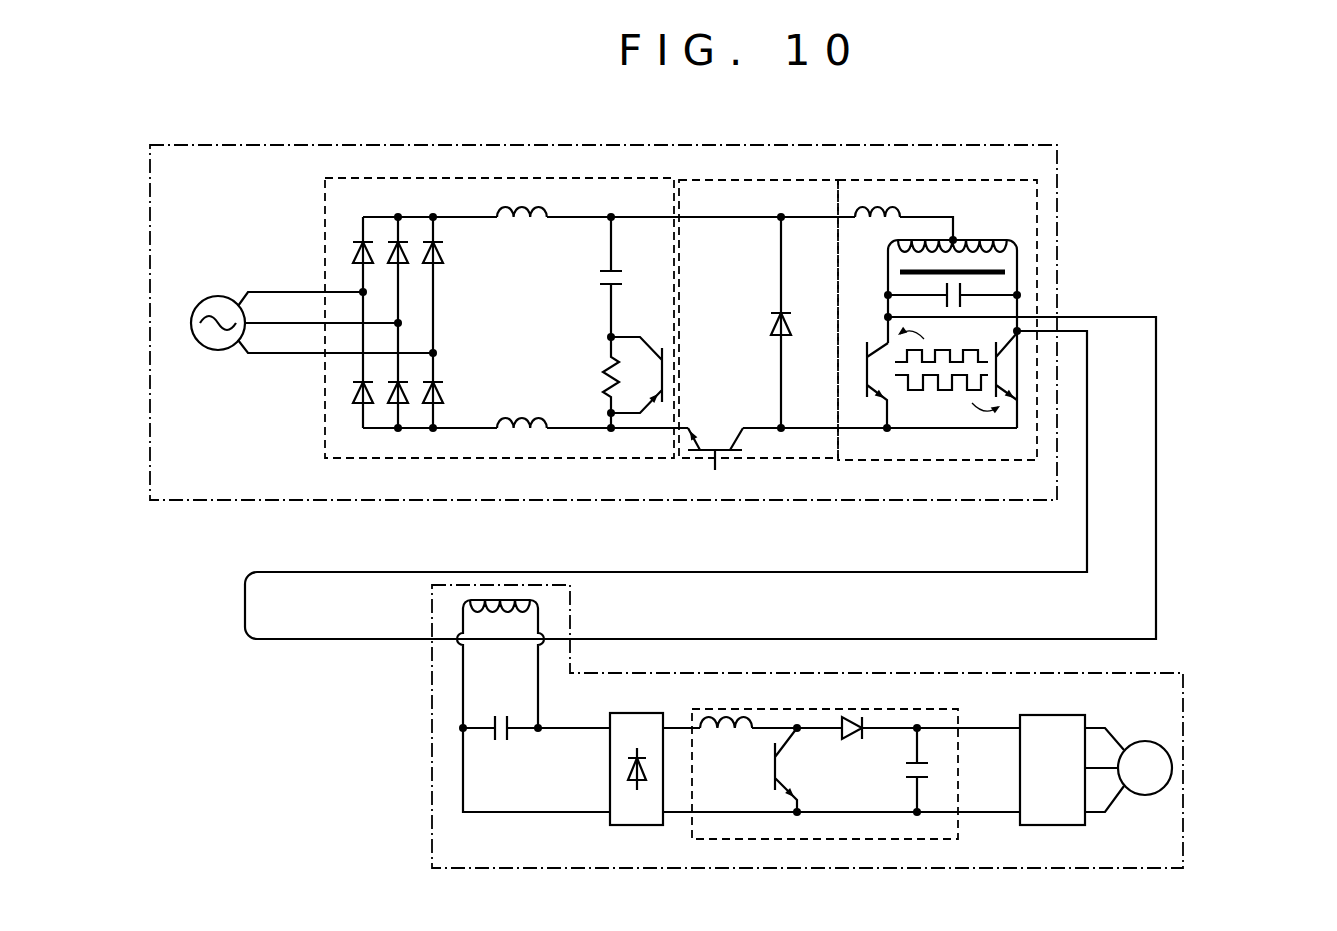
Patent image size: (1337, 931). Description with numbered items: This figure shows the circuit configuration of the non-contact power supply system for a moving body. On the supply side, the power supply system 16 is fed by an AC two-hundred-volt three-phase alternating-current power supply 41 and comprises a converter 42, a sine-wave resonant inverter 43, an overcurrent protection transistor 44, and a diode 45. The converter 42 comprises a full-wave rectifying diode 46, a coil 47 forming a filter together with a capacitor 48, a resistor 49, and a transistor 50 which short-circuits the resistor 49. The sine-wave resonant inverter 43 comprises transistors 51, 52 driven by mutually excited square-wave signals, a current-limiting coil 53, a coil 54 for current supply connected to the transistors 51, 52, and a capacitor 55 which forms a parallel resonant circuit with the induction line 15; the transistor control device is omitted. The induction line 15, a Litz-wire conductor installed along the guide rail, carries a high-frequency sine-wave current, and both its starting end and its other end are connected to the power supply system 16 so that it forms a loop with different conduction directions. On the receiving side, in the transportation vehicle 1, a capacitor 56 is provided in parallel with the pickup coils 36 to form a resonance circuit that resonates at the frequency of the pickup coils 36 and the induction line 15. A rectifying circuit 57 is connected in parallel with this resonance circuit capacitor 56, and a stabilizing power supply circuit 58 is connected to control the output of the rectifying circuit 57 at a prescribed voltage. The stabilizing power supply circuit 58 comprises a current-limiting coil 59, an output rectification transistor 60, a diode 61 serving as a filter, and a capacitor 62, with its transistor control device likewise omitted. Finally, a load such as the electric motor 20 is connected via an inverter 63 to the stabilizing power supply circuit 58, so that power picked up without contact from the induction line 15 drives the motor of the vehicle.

The transportation vehicle 1 is at (1183, 745).
The induction line 15 is at (1156, 496).
The power supply system 16 is at (1057, 209).
The electric motor 20 is at (1140, 742).
The pickup coils 36 is at (540, 612).
The three-phase alternating-current power supply 41 is at (218, 295).
The converter 42 is at (678, 190).
The sine-wave resonant inverter 43 is at (838, 192).
The overcurrent protection transistor 44 is at (718, 446).
The diode 45 is at (776, 314).
The full-wave rectifying diode 46 is at (433, 295).
The coil 47 is at (525, 223).
The capacitor 48 is at (600, 277).
The resistor 49 is at (600, 373).
The transistor 50 is at (658, 347).
The transistor 51 is at (867, 372).
The transistor 52 is at (1006, 350).
The current-limiting coil 53 is at (873, 210).
The coil for current supply 54 is at (971, 238).
The capacitor 55 is at (953, 281).
The capacitor 56 is at (500, 716).
The rectifying circuit 57 is at (610, 758).
The stabilizing power supply circuit 58 is at (958, 724).
The current-limiting coil 59 is at (722, 738).
The output rectification transistor 60 is at (778, 770).
The diode 61 is at (853, 740).
The capacitor 62 is at (908, 771).
The inverter 63 is at (1083, 728).